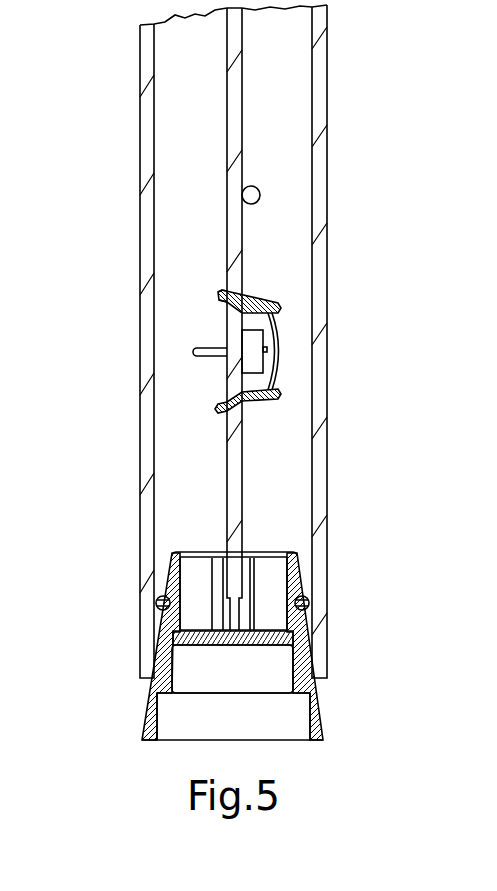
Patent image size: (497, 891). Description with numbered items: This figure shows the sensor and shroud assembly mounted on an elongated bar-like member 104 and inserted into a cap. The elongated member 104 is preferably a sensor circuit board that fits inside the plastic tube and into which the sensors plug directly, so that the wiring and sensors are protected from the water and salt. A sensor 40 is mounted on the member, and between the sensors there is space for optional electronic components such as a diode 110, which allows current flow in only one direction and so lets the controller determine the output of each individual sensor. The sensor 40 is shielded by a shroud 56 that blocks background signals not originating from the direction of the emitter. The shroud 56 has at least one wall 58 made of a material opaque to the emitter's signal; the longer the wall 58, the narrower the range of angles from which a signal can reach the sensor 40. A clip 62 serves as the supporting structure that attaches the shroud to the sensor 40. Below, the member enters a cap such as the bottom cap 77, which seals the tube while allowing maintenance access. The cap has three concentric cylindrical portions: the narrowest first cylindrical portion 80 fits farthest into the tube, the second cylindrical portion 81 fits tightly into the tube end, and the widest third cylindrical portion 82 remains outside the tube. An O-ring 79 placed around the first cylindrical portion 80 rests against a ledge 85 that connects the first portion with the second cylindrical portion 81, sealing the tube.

The elongated bar-like member 104 is at (233, 115).
The diode 110 is at (258, 196).
The shroud 56 is at (279, 304).
The clip 62 is at (218, 293).
The wall 58 is at (280, 395).
The sensor 40 is at (257, 360).
The first cylindrical portion 80 is at (173, 573).
The O-ring 79 is at (308, 594).
The ledge 85 is at (312, 627).
The second cylindrical portion 81 is at (173, 636).
The bottom cap 77 is at (323, 693).
The third cylindrical portion 82 is at (150, 725).